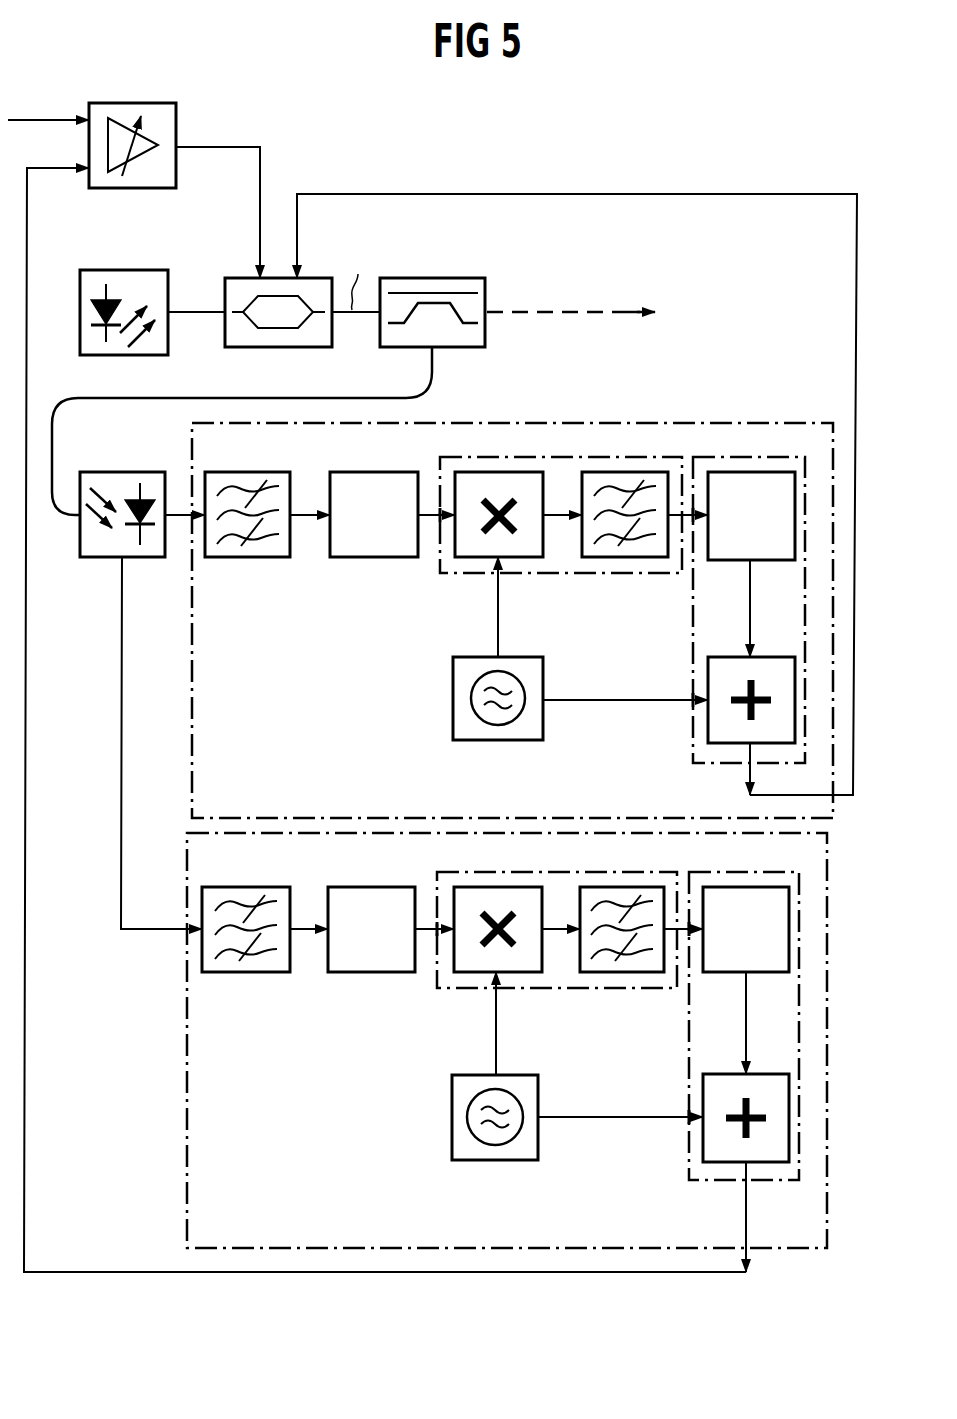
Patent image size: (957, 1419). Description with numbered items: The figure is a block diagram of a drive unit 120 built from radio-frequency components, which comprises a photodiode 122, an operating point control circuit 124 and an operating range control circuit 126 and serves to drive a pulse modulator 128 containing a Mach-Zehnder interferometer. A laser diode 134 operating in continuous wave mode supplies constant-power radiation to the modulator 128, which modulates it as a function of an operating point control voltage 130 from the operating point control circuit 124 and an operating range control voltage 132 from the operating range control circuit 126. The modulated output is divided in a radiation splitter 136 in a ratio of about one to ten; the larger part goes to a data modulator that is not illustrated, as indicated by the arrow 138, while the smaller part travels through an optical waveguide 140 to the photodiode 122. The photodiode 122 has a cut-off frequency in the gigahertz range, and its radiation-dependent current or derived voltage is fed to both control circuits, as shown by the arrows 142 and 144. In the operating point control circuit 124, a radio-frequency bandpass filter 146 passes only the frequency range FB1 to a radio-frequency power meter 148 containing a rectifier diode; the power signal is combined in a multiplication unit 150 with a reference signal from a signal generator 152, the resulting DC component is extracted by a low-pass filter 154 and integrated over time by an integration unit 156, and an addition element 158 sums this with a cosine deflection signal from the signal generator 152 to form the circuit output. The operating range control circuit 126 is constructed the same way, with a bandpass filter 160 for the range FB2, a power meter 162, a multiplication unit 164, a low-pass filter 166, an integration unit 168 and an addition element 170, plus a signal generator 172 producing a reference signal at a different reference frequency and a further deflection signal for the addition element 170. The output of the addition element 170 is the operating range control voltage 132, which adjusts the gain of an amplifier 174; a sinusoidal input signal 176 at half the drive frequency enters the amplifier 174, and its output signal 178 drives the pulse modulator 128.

The drive unit 120 is at (153, 843).
The photodiode 122 is at (78, 566).
The operating point control circuit 124 is at (750, 423).
The operating range control circuit 126 is at (187, 1170).
The pulse modulator 128 is at (335, 336).
The operating point control voltage 130 is at (646, 193).
The operating range control voltage 132 is at (25, 1062).
The laser diode 134 is at (170, 338).
The radiation splitter 136 is at (464, 278).
The arrow to data modulator 138 is at (580, 306).
The optical waveguide 140 is at (437, 372).
The arrow for input signal to operating point control circuit 142 is at (178, 520).
The arrow for input signal to operating range control circuit 144 is at (121, 880).
The radio-frequency bandpass filter 146 is at (250, 560).
The radio-frequency power meter 148 is at (336, 560).
The multiplication unit 150 is at (532, 560).
The signal generator 152 is at (453, 702).
The low-pass filter 154 is at (650, 560).
The integration unit 156 is at (781, 562).
The addition element 158 is at (712, 745).
The bandpass filter 160 is at (242, 975).
The power meter 162 is at (334, 975).
The multiplication unit 164 is at (531, 975).
The low-pass filter 166 is at (650, 975).
The integration unit 168 is at (773, 975).
The addition element 170 is at (714, 1165).
The signal generator 172 is at (452, 1118).
The amplifier 174 is at (158, 103).
The input signal 176 is at (45, 118).
The output signal 178 is at (241, 145).